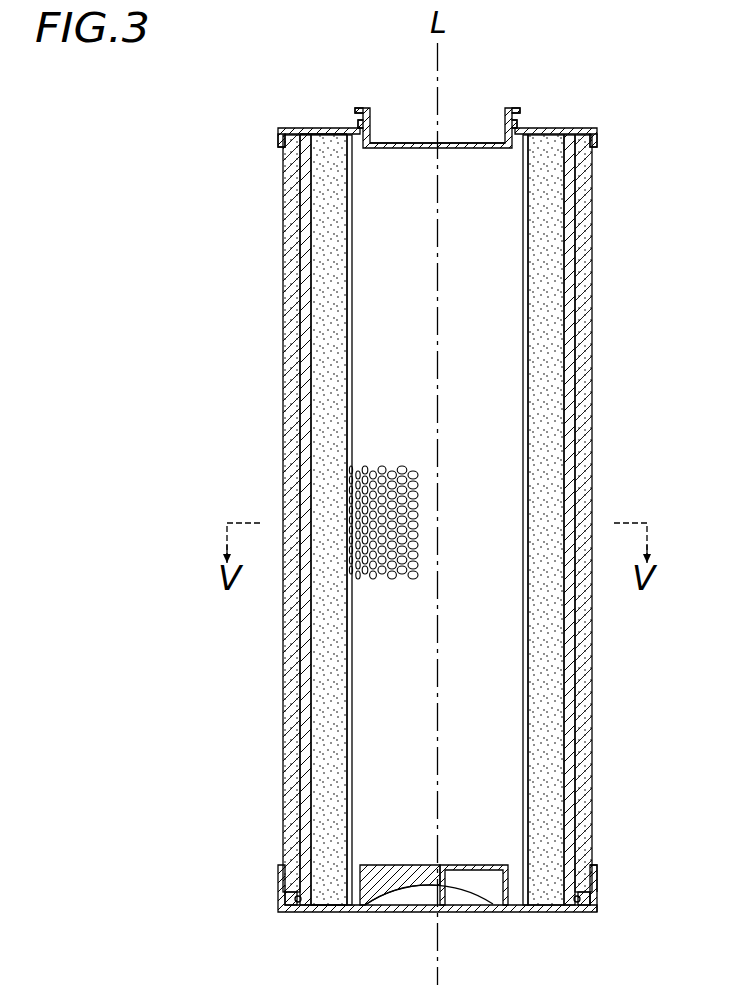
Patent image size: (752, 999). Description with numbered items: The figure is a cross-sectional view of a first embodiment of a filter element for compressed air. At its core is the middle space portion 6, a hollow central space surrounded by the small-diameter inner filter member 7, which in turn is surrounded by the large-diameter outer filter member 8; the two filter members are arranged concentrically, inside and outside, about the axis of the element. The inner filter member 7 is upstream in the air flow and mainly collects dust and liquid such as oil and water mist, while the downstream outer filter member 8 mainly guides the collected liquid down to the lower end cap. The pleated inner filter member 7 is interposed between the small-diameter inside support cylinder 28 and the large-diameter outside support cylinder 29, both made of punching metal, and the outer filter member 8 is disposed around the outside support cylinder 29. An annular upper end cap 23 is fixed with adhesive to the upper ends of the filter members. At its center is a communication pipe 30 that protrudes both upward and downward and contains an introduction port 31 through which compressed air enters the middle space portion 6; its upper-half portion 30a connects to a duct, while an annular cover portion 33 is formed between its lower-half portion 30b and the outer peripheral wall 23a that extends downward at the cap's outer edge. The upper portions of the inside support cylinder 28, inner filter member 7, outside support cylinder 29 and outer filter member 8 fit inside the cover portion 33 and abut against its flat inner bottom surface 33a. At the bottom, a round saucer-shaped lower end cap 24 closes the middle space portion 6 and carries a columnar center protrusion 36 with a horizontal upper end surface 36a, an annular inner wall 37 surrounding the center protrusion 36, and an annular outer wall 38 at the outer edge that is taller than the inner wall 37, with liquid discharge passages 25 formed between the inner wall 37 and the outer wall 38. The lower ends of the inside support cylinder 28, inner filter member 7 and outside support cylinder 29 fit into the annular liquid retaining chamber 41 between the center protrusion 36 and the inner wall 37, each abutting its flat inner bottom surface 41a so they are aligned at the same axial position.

The middle space portion 6 is at (488, 338).
The inner filter member 7 is at (553, 362).
The outer filter member 8 is at (580, 435).
The upper end cap 23 is at (393, 116).
The outer peripheral wall 23a is at (278, 145).
The lower end cap 24 is at (441, 860).
The liquid discharge passages 25 is at (597, 905).
The inside support cylinder 28 is at (348, 325).
The outside support cylinder 29 is at (299, 406).
The communication pipe 30 is at (423, 84).
The upper-half portion of the communication pipe 30a is at (359, 119).
The lower-half portion of the communication pipe 30b is at (369, 146).
The introduction port 31 is at (462, 135).
The cover portion 33 is at (393, 138).
The inner bottom surface of the cover portion 33a is at (325, 137).
The center protrusion 36 is at (366, 831).
The upper end surface of the center protrusion 36a is at (468, 865).
The inner wall 37 is at (577, 897).
The outer wall 38 is at (597, 869).
The liquid retaining chamber 41 is at (298, 903).
The inner bottom surface of the liquid retaining chamber 41a is at (320, 898).